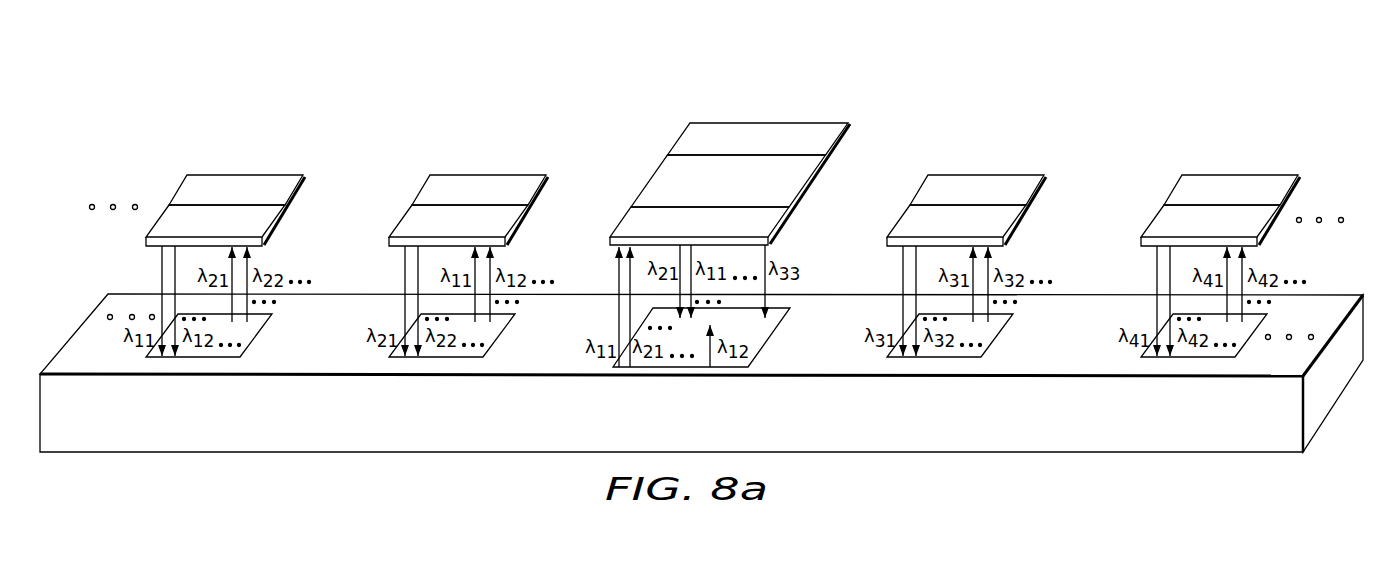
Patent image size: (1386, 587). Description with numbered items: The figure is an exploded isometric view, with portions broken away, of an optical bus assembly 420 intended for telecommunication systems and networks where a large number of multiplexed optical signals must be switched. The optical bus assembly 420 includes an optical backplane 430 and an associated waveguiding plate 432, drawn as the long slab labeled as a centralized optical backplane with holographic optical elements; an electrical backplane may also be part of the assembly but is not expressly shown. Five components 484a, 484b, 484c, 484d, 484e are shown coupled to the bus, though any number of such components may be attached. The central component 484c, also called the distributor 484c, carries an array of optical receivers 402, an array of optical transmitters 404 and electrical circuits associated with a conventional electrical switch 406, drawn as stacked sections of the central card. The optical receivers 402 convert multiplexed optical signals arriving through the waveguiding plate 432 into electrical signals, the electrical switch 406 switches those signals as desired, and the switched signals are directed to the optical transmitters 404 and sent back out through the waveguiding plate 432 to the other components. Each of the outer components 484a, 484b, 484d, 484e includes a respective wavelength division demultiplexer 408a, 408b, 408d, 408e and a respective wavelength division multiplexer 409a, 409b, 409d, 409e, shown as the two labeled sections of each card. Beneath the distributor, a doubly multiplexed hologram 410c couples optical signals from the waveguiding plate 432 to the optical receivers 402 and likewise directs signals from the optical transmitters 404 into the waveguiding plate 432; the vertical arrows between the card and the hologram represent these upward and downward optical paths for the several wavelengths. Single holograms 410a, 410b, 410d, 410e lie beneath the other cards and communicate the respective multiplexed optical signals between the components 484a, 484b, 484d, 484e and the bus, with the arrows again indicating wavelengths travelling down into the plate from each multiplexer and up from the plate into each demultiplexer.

The optical receivers 402 is at (625, 223).
The optical transmitters 404 is at (688, 138).
The electrical switch 406 is at (662, 177).
The wavelength division demultiplexer 408a is at (160, 223).
The wavelength division demultiplexer 408b is at (417, 225).
The wavelength division demultiplexer 408d is at (915, 225).
The wavelength division demultiplexer 408e is at (1169, 225).
The wavelength division multiplexer 409a is at (187, 190).
The wavelength division multiplexer 409b is at (463, 177).
The wavelength division multiplexer 409d is at (961, 177).
The wavelength division multiplexer 409e is at (1215, 177).
The single hologram 410a is at (258, 337).
The single hologram 410b is at (481, 343).
The doubly multiplexed hologram 410c is at (773, 333).
The single hologram 410d is at (979, 343).
The single hologram 410e is at (1211, 370).
The optical bus assembly 420 is at (86, 292).
The optical backplane 430 is at (1318, 282).
The waveguiding plate 432 is at (157, 443).
The component 484a is at (244, 171).
The component 484b is at (427, 183).
The central component (distributor) 484c is at (853, 124).
The component 484d is at (925, 183).
The component 484e is at (1179, 183).